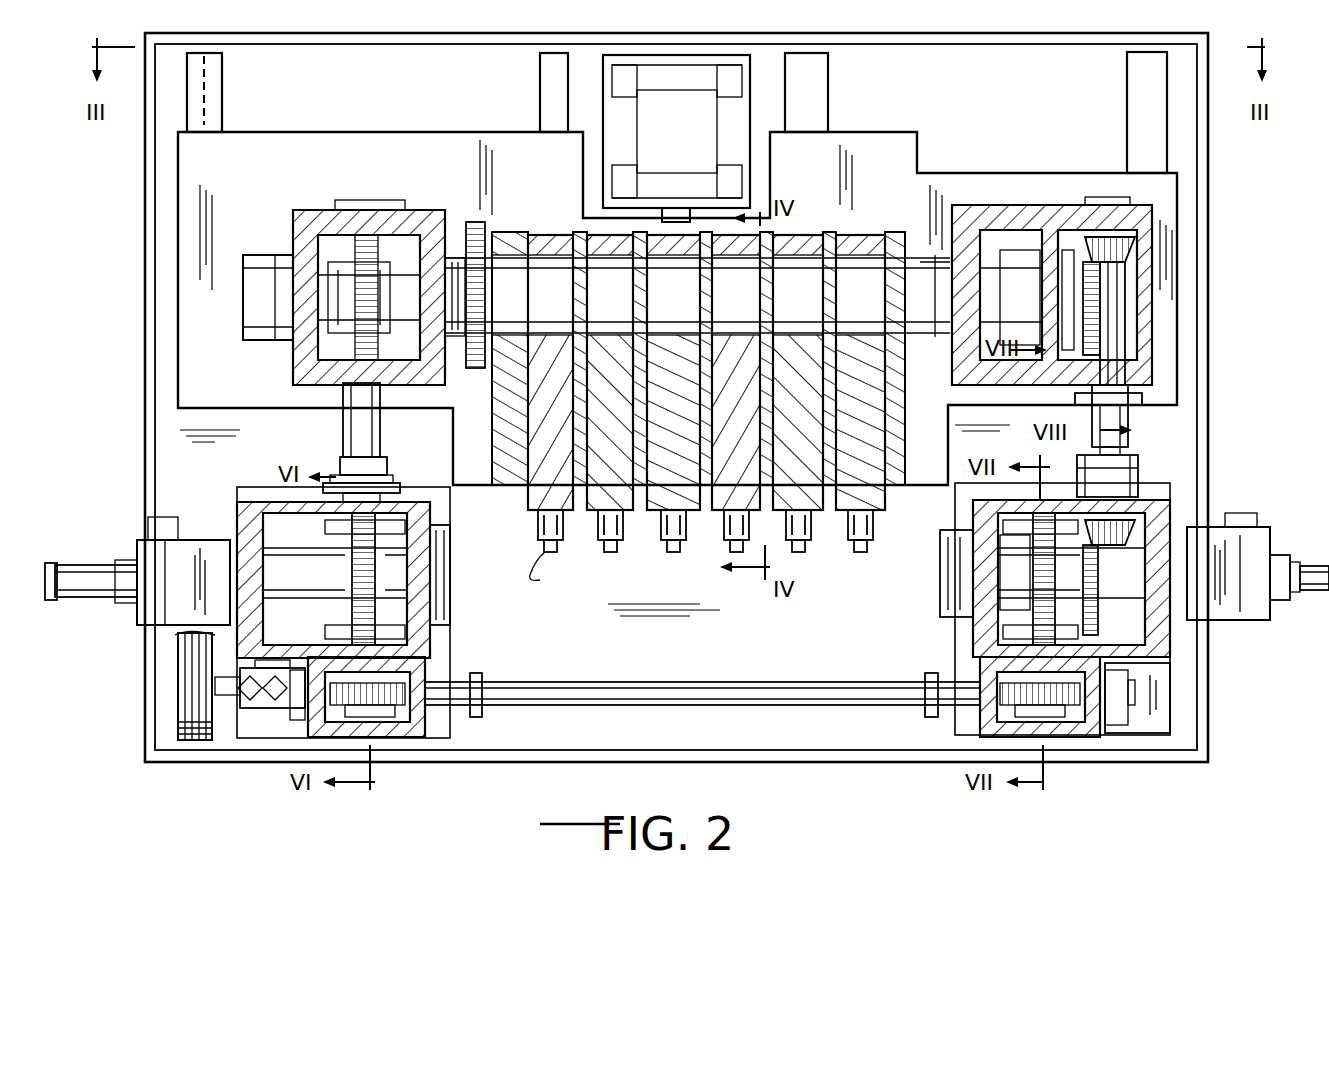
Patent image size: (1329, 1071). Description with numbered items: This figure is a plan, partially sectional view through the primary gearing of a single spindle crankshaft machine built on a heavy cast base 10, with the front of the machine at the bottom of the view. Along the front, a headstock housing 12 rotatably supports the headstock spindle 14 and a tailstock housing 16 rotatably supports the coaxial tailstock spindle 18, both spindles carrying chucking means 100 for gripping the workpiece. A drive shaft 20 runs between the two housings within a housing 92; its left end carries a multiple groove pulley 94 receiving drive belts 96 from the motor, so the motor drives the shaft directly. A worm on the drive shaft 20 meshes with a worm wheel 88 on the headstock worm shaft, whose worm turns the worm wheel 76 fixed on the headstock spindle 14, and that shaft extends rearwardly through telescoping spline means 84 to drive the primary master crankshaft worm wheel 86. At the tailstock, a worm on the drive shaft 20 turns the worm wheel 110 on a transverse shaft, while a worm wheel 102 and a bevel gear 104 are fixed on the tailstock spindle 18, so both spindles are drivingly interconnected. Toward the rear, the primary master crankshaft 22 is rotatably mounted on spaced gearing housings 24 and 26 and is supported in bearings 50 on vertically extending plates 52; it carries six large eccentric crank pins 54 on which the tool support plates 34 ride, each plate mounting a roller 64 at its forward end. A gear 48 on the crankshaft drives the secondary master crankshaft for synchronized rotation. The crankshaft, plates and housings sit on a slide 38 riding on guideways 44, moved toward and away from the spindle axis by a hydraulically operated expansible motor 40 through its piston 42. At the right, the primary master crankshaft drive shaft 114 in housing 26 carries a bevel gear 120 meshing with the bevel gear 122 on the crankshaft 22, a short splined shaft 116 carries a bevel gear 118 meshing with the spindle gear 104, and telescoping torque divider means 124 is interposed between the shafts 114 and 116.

The base 10 is at (800, 762).
The headstock housing 12 is at (245, 490).
The headstock spindle 14 is at (298, 589).
The tailstock housing 16 is at (1160, 658).
The tailstock spindle 18 is at (1150, 598).
The drive shaft 20 is at (745, 710).
The primary master crankshaft 22 is at (748, 255).
The gearing housing 24 is at (293, 235).
The gearing housing 26 is at (1005, 230).
The tool support plates 34 is at (660, 500).
The slide 38 is at (950, 173).
The expansible motor 40 is at (683, 122).
The piston 42 is at (672, 208).
The guideways 44 is at (210, 112).
The gear 48 is at (478, 222).
The bearings 50 is at (640, 300).
The plates 52 is at (688, 345).
The crank pins 54 is at (562, 307).
The roller 64 is at (612, 553).
The worm wheel 76 is at (352, 595).
The telescoping spline means 84 is at (362, 440).
The primary master crankshaft worm wheel 86 is at (352, 360).
The worm wheel 88 is at (395, 737).
The housing 92 is at (445, 672).
The multiple groove pulley 94 is at (178, 693).
The drive belts 96 is at (180, 640).
The chucking means 100 is at (450, 580).
The worm wheel 102 is at (1035, 550).
The bevel gear 104 is at (1092, 590).
The worm wheel 110 is at (1065, 737).
The primary master crankshaft drive shaft 114 is at (1110, 330).
The splined shaft 116 is at (1135, 450).
The bevel gear 118 is at (1135, 530).
The bevel gear 120 is at (1135, 248).
The bevel gear 122 is at (1100, 290).
The telescoping torque divider means 124 is at (1140, 430).